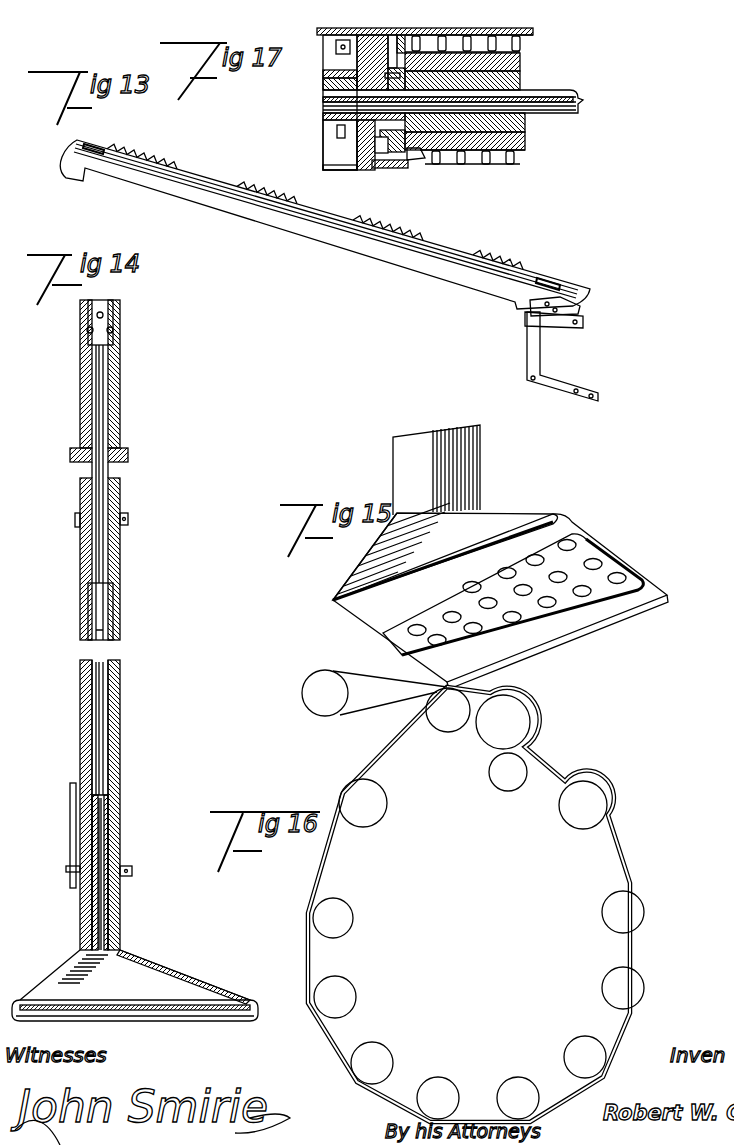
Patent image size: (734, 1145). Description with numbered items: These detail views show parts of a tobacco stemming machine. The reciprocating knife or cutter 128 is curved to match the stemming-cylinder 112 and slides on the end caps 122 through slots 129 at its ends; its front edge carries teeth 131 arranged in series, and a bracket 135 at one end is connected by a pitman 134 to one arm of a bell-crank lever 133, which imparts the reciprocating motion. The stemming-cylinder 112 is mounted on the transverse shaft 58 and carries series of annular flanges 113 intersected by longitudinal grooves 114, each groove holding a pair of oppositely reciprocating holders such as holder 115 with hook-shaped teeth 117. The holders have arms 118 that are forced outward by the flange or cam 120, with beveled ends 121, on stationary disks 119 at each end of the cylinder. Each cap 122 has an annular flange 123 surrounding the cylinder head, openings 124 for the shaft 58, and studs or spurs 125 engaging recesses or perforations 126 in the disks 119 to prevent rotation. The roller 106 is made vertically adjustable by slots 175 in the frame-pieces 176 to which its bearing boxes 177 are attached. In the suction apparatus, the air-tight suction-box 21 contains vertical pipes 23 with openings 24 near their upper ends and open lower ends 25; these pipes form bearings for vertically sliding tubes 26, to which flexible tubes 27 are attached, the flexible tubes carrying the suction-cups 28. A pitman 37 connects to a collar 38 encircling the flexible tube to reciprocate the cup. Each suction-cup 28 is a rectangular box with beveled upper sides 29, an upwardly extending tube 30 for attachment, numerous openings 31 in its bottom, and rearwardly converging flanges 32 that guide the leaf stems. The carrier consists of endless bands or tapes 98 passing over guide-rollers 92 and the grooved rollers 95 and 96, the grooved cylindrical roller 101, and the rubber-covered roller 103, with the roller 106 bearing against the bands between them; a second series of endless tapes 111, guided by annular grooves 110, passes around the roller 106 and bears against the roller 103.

In FIG. 13, the reciprocating knife or cutter 128 is at (325, 224).
In FIG. 17, the reciprocating knife or cutter 128 is at (538, 36).
In FIG. 13, the slots 129 is at (106, 147).
In FIG. 17, the slots 129 is at (355, 28).
In FIG. 13, the teeth 131 is at (500, 262).
In FIG. 13, the bell-crank lever 133 is at (527, 350).
In FIG. 13, the pitman 134 is at (554, 332).
In FIG. 13, the bracket 135 is at (582, 308).
In FIG. 17, the boxes 177 is at (323, 80).
In FIG. 17, the beveled ends 121 is at (372, 30).
In FIG. 17, the disks 119 is at (393, 50).
In FIG. 17, the arms 118 is at (405, 42).
In FIG. 17, the holder 115 is at (457, 33).
In FIG. 17, the annular flanges 113 is at (502, 33).
In FIG. 17, the hook-shaped teeth 117 is at (526, 45).
In FIG. 17, the longitudinal grooves 114 is at (521, 70).
In FIG. 17, the transverse shaft 58 is at (462, 100).
In FIG. 17, the stemming-cylinder 112 is at (444, 131).
In FIG. 17, the openings 124 is at (325, 116).
In FIG. 17, the studs or spurs 125 is at (340, 142).
In FIG. 17, the frame-pieces 176 is at (330, 140).
In FIG. 17, the slots 175 is at (385, 127).
In FIG. 17, the cap 122 is at (366, 150).
In FIG. 17, the flange or cam 120 is at (382, 152).
In FIG. 17, the annular flange 123 is at (395, 170).
In FIG. 17, the recesses or perforations 126 is at (410, 150).
In FIG. 14, the vertical pipes 23 is at (120, 400).
In FIG. 14, the openings 24 is at (114, 331).
In FIG. 14, the suction-box 21 is at (72, 453).
In FIG. 14, the open lower ends 25 is at (121, 462).
In FIG. 14, the vertically-sliding tubes 26 is at (88, 474).
In FIG. 14, the flexible tubes 27 is at (118, 626).
In FIG. 14, the upwardly-extending tubes 30 is at (120, 912).
In FIG. 15, the upwardly-extending tubes 30 is at (393, 468).
In FIG. 14, the pitman 37 is at (70, 815).
In FIG. 14, the collar 38 is at (70, 880).
In FIG. 14, the suction-cups 28 is at (152, 962).
In FIG. 15, the suction-cups 28 is at (330, 600).
In FIG. 14, the beveled upper sides 29 is at (183, 977).
In FIG. 15, the beveled upper sides 29 is at (510, 515).
In FIG. 14, the openings 31 is at (110, 1006).
In FIG. 15, the openings 31 is at (471, 585).
In FIG. 14, the rearwardly-converging flanges 32 is at (200, 1020).
In FIG. 15, the rearwardly-converging flanges 32 is at (500, 601).
In FIG. 16, the endless bands or tapes 98 is at (632, 843).
In FIG. 16, the endless bands or tapes 111 is at (390, 684).
In FIG. 16, the annular grooves 110 is at (325, 693).
In FIG. 16, the roller 103 is at (443, 725).
In FIG. 16, the roller 106 is at (503, 722).
In FIG. 16, the cylindrical roller 101 is at (509, 788).
In FIG. 16, the roller 95 is at (363, 803).
In FIG. 16, the roller 96 is at (583, 805).
In FIG. 16, the guide-rollers 92 is at (622, 934).